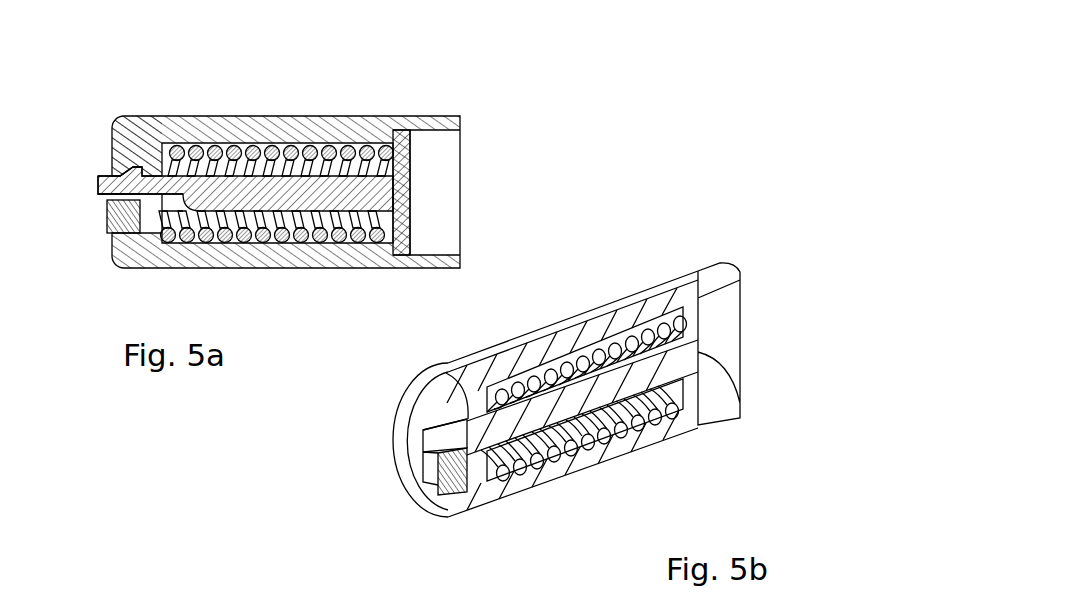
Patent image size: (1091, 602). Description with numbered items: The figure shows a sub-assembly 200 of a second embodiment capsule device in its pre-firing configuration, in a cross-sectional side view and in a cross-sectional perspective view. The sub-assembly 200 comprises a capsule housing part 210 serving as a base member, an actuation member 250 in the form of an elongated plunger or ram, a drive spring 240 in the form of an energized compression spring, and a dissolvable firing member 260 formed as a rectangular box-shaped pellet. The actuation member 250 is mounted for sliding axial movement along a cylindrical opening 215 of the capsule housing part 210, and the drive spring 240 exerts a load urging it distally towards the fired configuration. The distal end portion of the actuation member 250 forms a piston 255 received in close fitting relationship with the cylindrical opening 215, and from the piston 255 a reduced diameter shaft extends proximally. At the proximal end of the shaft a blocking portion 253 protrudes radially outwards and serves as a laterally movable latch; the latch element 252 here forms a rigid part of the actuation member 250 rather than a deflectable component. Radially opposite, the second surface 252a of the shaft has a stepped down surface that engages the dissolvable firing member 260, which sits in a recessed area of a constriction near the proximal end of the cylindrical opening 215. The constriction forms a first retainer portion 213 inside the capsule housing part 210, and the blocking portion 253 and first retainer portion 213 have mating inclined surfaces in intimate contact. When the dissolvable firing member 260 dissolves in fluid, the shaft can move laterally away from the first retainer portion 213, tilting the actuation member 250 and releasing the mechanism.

In FIG. 5a, the sub-assembly 200 is at (286, 163).
In FIG. 5b, the sub-assembly 200 is at (539, 393).
In FIG. 5a, the capsule housing part 210 is at (310, 164).
In FIG. 5b, the capsule housing part 210 is at (564, 371).
In FIG. 5a, the first retainer portion 213 is at (141, 165).
In FIG. 5b, the first retainer portion 213 is at (468, 415).
In FIG. 5a, the cylindrical opening 215 is at (325, 143).
In FIG. 5a, the drive spring 240 is at (285, 237).
In FIG. 5b, the drive spring 240 is at (582, 358).
In FIG. 5a, the actuation member 250 is at (201, 208).
In FIG. 5b, the actuation member 250 is at (499, 450).
In FIG. 5a, the latch element 252 is at (120, 183).
In FIG. 5b, the latch element 252 is at (447, 447).
In FIG. 5a, the second surface 252a is at (135, 196).
In FIG. 5a, the blocking portion 253 is at (123, 171).
In FIG. 5b, the blocking portion 253 is at (457, 427).
In FIG. 5a, the piston 255 is at (398, 168).
In FIG. 5a, the dissolvable firing member 260 is at (120, 213).
In FIG. 5b, the dissolvable firing member 260 is at (445, 473).